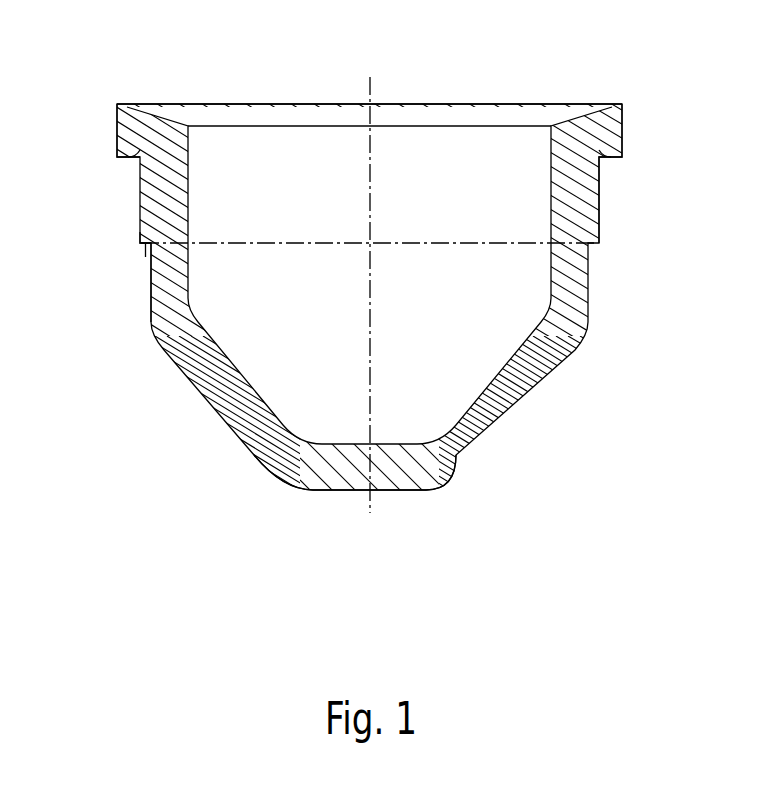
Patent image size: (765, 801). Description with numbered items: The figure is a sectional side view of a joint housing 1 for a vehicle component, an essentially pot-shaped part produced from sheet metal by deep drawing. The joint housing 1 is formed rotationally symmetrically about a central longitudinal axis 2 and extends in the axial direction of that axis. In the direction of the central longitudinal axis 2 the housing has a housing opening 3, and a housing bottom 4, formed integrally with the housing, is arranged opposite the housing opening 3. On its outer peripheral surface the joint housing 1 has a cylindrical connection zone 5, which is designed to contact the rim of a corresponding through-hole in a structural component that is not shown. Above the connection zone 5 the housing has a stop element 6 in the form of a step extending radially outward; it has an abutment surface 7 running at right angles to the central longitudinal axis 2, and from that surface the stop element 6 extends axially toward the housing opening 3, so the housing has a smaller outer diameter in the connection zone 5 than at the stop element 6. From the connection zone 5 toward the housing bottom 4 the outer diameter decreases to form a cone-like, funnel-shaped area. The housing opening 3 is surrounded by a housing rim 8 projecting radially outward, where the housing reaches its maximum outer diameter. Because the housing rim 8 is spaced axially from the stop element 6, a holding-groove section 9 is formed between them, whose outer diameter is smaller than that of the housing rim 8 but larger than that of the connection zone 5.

The joint housing 1 is at (538, 408).
The central longitudinal axis 2 is at (372, 88).
The housing opening 3 is at (298, 91).
The housing bottom 4 is at (429, 516).
The connection zone 5 is at (145, 290).
The stop element 6 is at (139, 241).
The abutment surface 7 is at (141, 246).
The housing rim 8 is at (118, 111).
The holding-groove section 9 is at (601, 195).